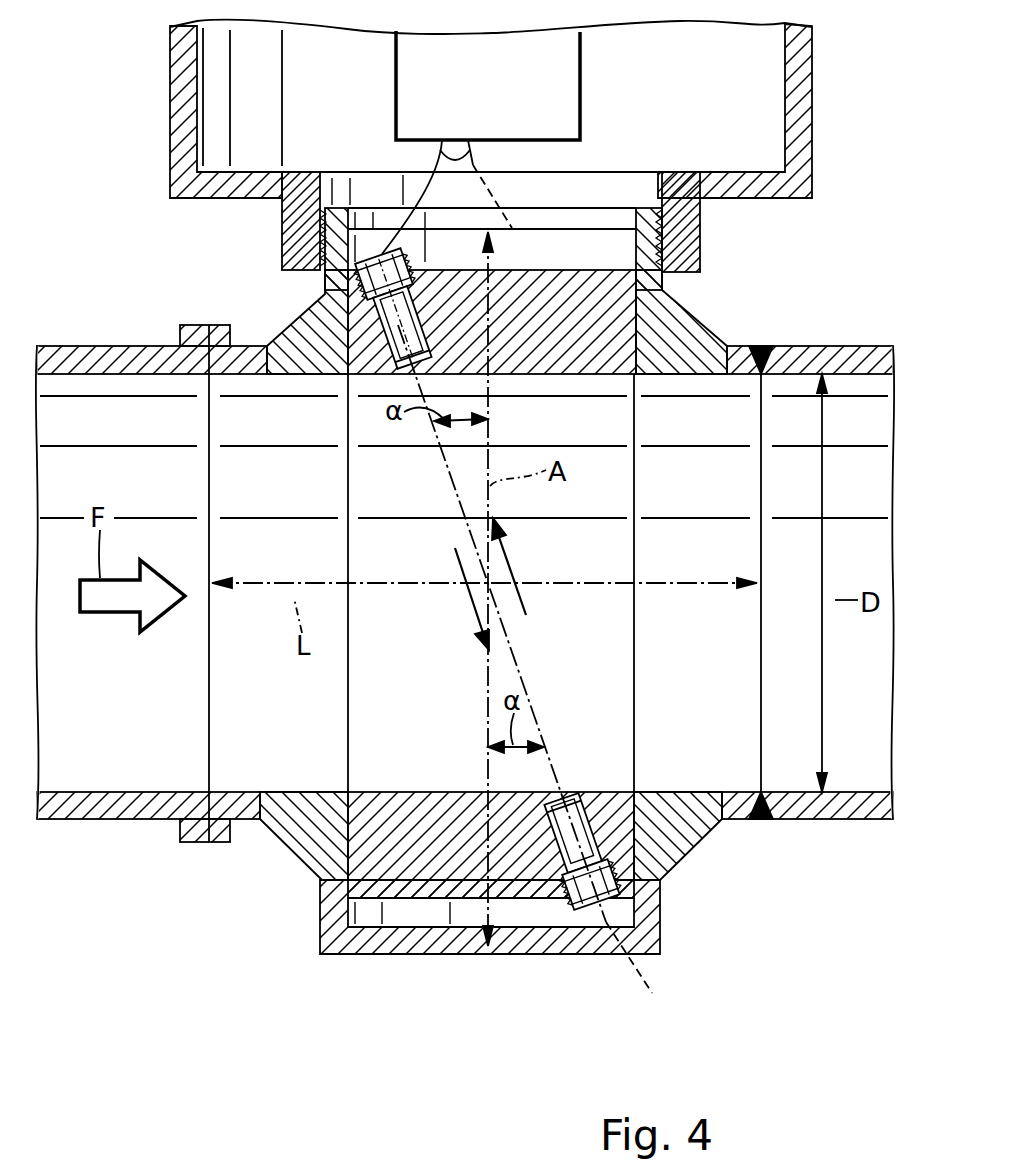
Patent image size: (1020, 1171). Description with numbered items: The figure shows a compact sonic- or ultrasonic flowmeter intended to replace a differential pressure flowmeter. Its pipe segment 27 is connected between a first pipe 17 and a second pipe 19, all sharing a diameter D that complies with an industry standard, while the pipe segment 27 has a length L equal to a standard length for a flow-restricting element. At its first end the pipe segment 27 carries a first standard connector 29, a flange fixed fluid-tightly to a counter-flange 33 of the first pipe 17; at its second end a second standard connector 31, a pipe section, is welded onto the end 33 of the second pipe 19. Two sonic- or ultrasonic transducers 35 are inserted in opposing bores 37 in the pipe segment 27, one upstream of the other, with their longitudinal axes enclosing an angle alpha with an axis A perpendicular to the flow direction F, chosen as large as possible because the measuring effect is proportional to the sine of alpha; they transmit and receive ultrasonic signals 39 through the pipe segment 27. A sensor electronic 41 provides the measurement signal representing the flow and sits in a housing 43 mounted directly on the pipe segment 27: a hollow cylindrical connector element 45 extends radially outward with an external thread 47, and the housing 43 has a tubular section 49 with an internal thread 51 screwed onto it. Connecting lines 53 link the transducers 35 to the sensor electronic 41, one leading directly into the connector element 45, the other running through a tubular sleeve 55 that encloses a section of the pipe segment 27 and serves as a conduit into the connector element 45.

The first pipe 17 is at (103, 803).
The second pipe 19 is at (835, 803).
The pipe segment 27 is at (292, 819).
The first standard connector 29 is at (222, 825).
The second standard connector 31 is at (760, 822).
The counter-flange 33 is at (764, 822).
The sonic- or ultrasonic transducer 35 is at (356, 290).
The bore 37 is at (395, 345).
The ultrasonic signals 39 is at (522, 572).
The sensor electronic 41 is at (497, 96).
The housing 43 is at (190, 102).
The connector element 45 is at (642, 258).
The external thread 47 is at (664, 226).
The tubular section 49 is at (300, 222).
The internal thread 51 is at (320, 252).
The connecting line 53 is at (443, 165).
The tubular sleeve 55 is at (375, 938).